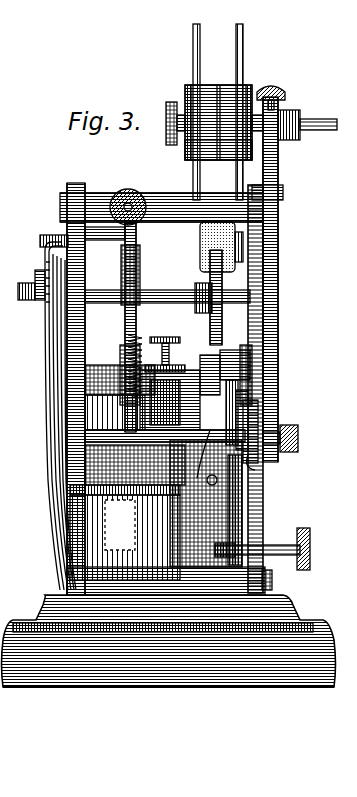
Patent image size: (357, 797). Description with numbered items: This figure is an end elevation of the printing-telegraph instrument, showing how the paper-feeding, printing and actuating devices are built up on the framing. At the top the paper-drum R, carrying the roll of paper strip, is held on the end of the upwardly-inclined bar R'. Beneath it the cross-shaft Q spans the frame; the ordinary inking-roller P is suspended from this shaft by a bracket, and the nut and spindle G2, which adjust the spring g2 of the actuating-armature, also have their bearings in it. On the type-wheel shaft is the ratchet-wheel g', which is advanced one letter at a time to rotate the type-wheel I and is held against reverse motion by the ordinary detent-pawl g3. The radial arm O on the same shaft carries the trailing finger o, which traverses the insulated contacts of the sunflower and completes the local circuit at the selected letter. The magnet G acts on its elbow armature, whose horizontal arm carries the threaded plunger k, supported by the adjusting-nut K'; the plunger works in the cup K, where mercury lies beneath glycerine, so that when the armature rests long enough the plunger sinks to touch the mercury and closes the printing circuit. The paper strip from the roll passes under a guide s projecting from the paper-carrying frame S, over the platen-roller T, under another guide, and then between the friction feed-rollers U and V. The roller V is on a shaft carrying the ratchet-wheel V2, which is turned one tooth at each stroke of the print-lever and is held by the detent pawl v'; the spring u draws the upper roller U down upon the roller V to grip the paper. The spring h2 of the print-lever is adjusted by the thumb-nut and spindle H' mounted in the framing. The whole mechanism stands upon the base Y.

The paper-drum R is at (220, 113).
The upwardly-inclined bar R' is at (294, 274).
The nut and spindle G2 is at (131, 203).
The cross-shaft Q is at (161, 200).
The detent-pawl g3 is at (137, 244).
The ratchet-wheel g' is at (118, 275).
The spring of the actuating-armature g2 is at (140, 355).
The plunger k is at (120, 352).
The radial arm O is at (35, 291).
The trailing finger o is at (46, 262).
The inking-roller P is at (205, 245).
The type-wheel I is at (220, 297).
The platen-roller T is at (226, 356).
The upper friction feed-roller U is at (204, 365).
The paper-carrying frame S is at (245, 365).
The guide s is at (246, 392).
The detent pawl v' is at (243, 421).
The adjusting-nut K' is at (142, 425).
The spring u is at (195, 424).
The magnet G is at (206, 503).
The lower friction feed-roller V is at (204, 462).
The spring of the print-lever h2 is at (242, 495).
The ratchet-wheel V2 is at (272, 453).
The thumb-nut and spindle H' is at (262, 559).
The cup K is at (125, 532).
The base Y is at (313, 628).